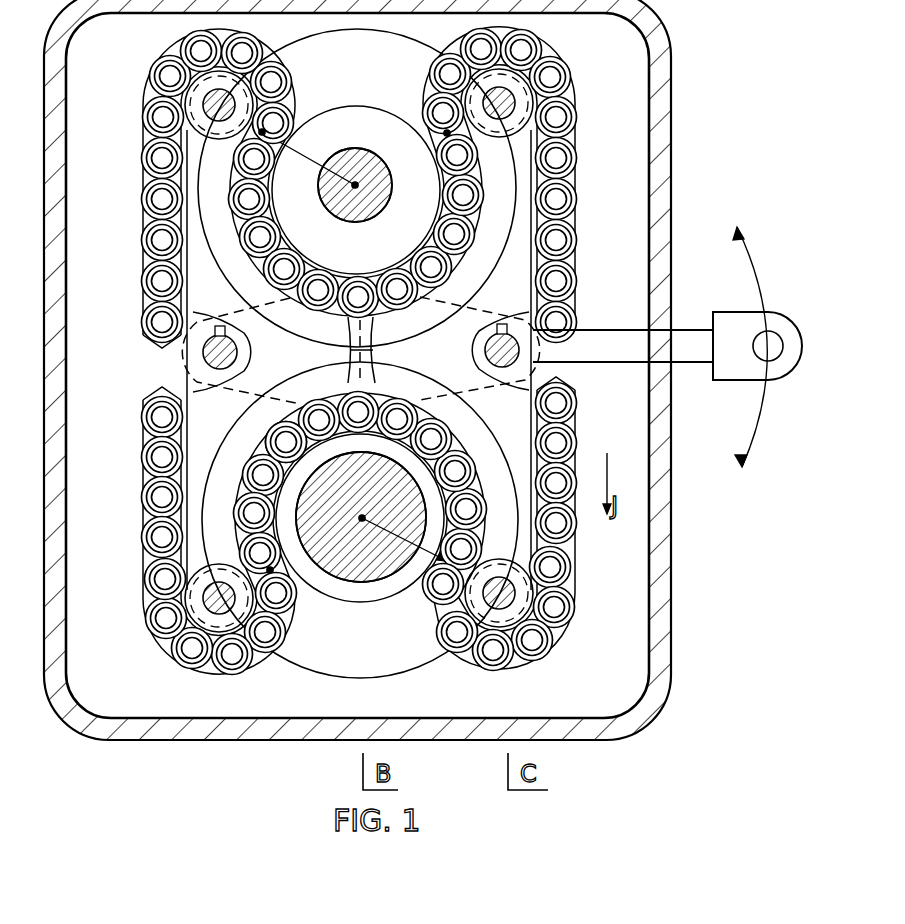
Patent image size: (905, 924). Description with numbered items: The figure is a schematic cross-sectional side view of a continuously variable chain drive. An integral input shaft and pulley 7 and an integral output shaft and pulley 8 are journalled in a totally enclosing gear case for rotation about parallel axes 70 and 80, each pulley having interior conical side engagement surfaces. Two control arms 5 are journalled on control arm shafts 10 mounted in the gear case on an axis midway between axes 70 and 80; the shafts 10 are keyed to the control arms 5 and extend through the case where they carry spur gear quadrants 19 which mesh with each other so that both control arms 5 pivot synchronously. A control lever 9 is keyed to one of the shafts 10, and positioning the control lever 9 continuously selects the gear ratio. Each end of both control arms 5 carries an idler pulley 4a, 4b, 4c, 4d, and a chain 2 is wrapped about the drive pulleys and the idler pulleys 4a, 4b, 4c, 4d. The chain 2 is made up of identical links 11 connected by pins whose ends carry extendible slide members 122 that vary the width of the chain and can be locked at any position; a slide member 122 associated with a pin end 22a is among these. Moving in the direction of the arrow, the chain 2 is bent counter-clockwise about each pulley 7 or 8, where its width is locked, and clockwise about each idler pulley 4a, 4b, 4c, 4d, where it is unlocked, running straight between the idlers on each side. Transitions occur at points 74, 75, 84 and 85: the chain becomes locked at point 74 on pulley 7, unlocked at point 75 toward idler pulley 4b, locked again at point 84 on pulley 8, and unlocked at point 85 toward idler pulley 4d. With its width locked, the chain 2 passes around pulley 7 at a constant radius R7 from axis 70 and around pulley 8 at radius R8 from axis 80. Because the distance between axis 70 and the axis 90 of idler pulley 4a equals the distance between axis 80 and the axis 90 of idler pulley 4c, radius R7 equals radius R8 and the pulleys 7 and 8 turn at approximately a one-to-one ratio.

The chain 2 is at (573, 197).
The idler pulley 4a is at (192, 98).
The idler pulley 4b is at (527, 118).
The idler pulley 4c is at (518, 615).
The idler pulley 4d is at (207, 617).
The control arm 5 is at (197, 280).
The integral input shaft and pulley 7 is at (352, 148).
The integral output shaft and pulley 8 is at (377, 588).
The control lever 9 is at (683, 328).
The control arm shaft 10 is at (203, 350).
The link 11 is at (148, 412).
The spur gear quadrant 19 is at (265, 383).
The guide rail 22a is at (147, 458).
The axis 70 is at (386, 205).
The transition point 74 is at (262, 132).
The transition point 75 is at (447, 133).
The axis 80 is at (362, 518).
The transition point 84 is at (425, 575).
The transition point 85 is at (272, 572).
The axis 90 is at (205, 97).
The extendible slide member 122 is at (158, 490).
The radius R7 is at (308, 156).
The radius R8 is at (404, 576).